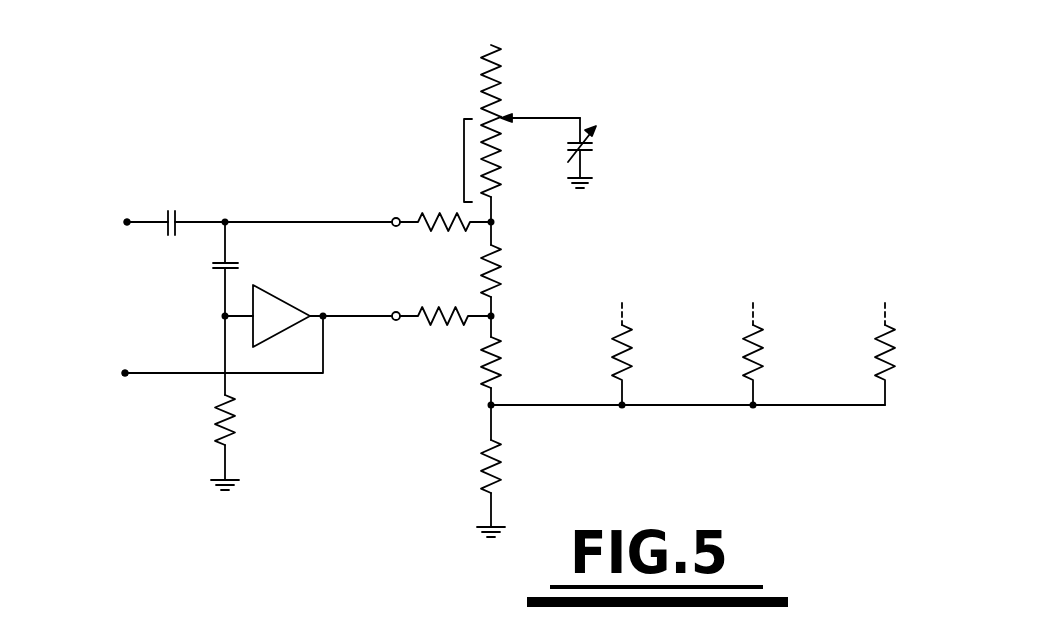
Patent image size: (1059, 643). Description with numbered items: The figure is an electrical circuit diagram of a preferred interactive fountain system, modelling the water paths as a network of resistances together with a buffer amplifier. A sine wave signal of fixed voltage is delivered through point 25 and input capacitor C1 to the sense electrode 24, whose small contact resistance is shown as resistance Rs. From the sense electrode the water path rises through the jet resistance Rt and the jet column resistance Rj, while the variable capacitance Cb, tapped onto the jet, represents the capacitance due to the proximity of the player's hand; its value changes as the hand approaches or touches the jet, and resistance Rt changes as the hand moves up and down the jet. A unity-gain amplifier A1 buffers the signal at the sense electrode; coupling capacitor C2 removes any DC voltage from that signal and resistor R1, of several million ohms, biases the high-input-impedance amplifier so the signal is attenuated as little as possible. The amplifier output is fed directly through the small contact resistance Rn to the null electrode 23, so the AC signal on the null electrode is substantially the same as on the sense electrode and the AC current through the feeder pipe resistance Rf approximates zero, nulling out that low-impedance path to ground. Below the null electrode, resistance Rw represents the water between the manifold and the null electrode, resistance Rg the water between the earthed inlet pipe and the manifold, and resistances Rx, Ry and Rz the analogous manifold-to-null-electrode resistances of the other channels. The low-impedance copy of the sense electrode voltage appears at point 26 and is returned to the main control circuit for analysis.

The point 25 is at (127, 222).
The point 26 is at (125, 373).
The sense electrode 24 is at (394, 218).
The null electrode 23 is at (394, 312).
The input capacitor C1 is at (167, 210).
The coupling capacitor C2 is at (213, 272).
The unity-gain amplifier A1 is at (284, 300).
The resistor R1 is at (238, 411).
The resistance Rs is at (436, 212).
The resistance Rn is at (440, 306).
The resistance of the contiguous water column Rj is at (483, 97).
The resistance of the jet portion Rt is at (462, 158).
The feeder pipe resistance Rf is at (503, 267).
The water resistance Rw is at (503, 352).
The water resistance Rg is at (500, 462).
The water resistance Rx is at (633, 350).
The water resistance Ry is at (764, 350).
The water resistance Rz is at (897, 350).
The variable capacitance Cb is at (596, 150).